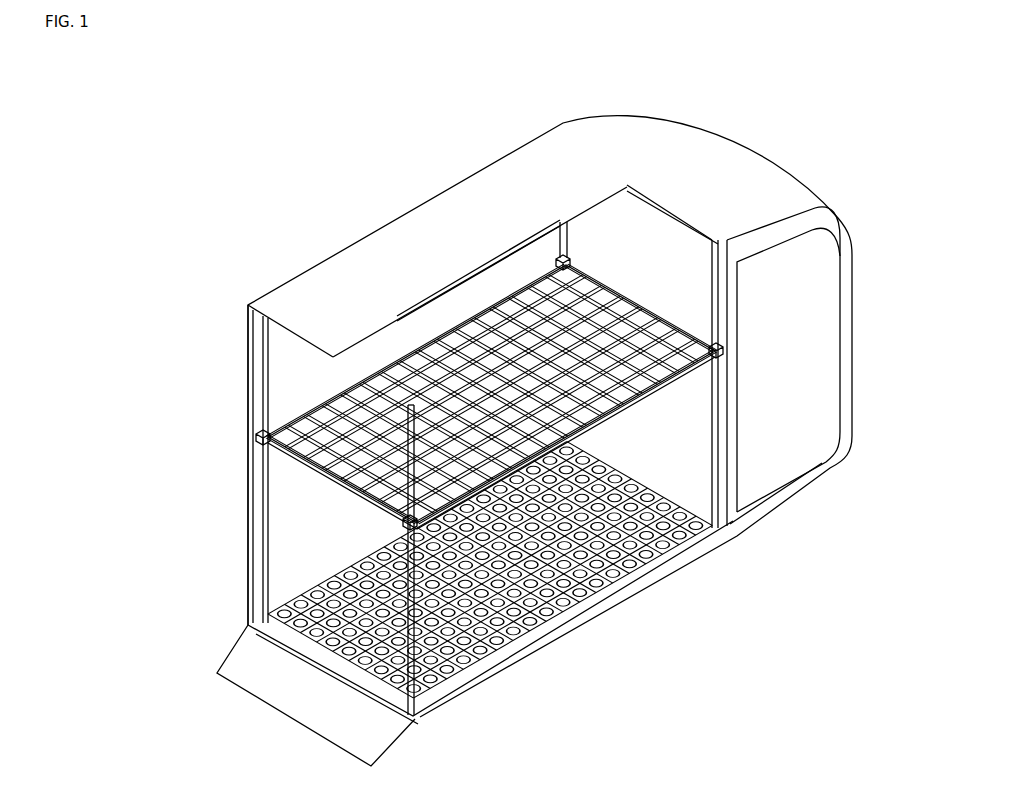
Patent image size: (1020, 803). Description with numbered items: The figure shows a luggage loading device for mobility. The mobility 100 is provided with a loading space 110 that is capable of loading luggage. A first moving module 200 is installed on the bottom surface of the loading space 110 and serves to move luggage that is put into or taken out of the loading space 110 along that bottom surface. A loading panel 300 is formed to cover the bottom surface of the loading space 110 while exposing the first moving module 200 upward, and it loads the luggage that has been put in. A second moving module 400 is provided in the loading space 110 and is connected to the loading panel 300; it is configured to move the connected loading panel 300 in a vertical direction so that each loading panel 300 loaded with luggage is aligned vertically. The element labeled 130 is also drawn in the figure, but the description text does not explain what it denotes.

The mobility 100 is at (466, 168).
The loading space 110 is at (436, 317).
The side opening frame 130 is at (300, 357).
The first moving module 200 is at (641, 574).
The loading panel 300 is at (606, 265).
The second moving module 400 is at (256, 506).